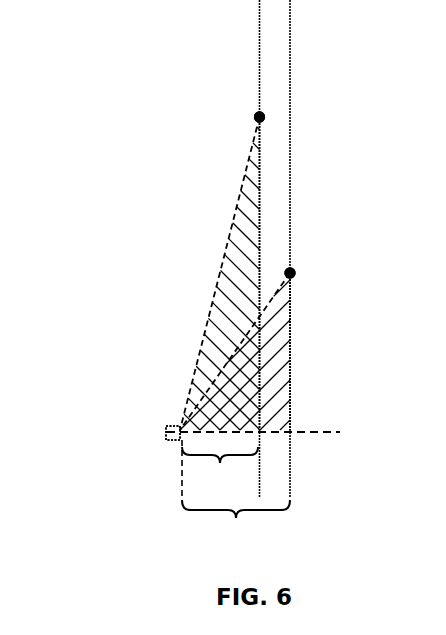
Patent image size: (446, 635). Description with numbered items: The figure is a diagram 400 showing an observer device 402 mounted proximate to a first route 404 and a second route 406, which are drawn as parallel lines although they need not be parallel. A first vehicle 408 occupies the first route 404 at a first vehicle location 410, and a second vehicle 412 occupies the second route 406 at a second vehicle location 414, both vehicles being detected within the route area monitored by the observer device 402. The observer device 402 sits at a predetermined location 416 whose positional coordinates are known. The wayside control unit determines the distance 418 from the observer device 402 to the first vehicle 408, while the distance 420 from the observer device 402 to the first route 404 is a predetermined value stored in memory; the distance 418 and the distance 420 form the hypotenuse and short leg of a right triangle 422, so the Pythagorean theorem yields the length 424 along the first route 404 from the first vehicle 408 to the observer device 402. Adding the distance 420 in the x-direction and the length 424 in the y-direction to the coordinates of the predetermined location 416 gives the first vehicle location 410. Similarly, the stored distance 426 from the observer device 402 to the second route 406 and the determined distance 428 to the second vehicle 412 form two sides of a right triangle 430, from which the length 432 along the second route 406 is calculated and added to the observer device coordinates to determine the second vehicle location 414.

The diagram 400 is at (138, 52).
The observer device 402 is at (175, 441).
The first route 404 is at (259, 47).
The second route 406 is at (291, 70).
The first vehicle 408 is at (256, 114).
The first vehicle location 410 is at (251, 117).
The second vehicle 412 is at (292, 270).
The second vehicle location 414 is at (297, 275).
The predetermined location 416 is at (164, 433).
The distance 418 is at (226, 262).
The distance 420 is at (220, 471).
The right triangle 422 is at (239, 209).
The length 424 is at (260, 187).
The distance 426 is at (236, 527).
The distance 428 is at (238, 348).
The right triangle 430 is at (285, 346).
The length 432 is at (291, 365).